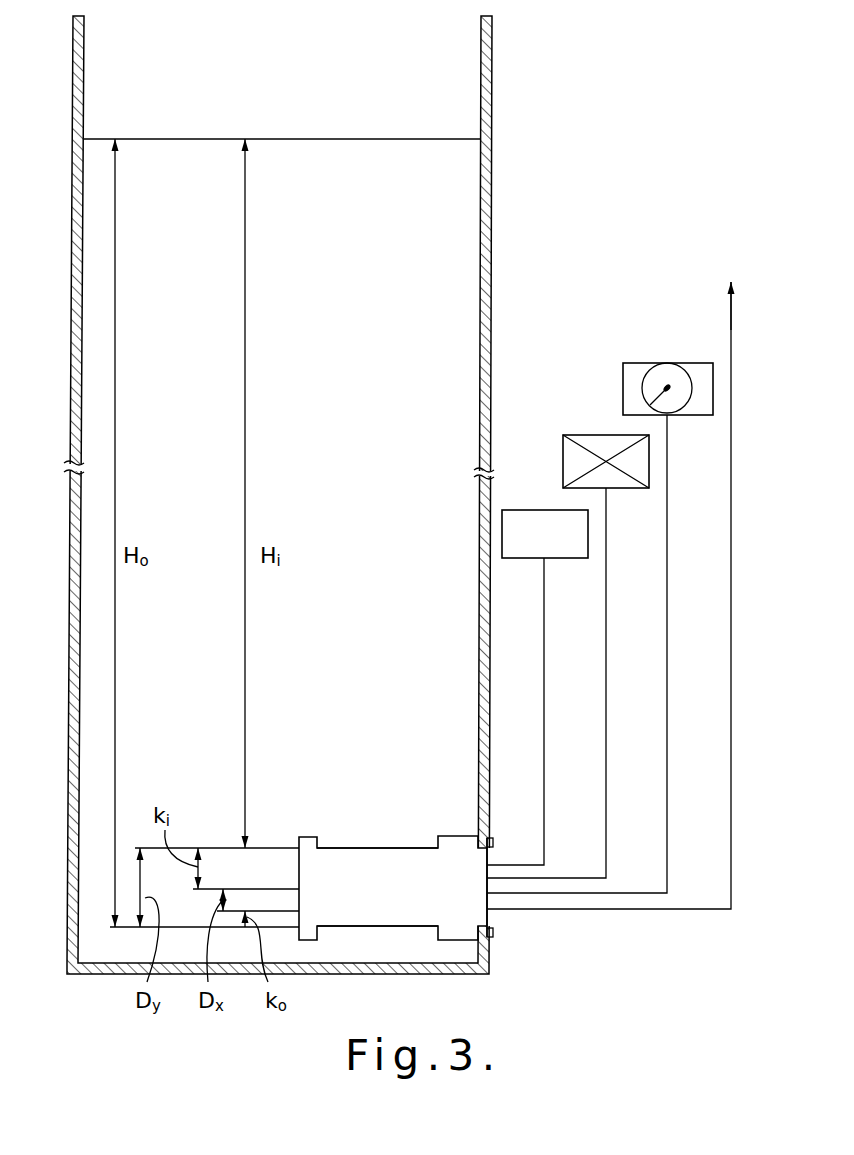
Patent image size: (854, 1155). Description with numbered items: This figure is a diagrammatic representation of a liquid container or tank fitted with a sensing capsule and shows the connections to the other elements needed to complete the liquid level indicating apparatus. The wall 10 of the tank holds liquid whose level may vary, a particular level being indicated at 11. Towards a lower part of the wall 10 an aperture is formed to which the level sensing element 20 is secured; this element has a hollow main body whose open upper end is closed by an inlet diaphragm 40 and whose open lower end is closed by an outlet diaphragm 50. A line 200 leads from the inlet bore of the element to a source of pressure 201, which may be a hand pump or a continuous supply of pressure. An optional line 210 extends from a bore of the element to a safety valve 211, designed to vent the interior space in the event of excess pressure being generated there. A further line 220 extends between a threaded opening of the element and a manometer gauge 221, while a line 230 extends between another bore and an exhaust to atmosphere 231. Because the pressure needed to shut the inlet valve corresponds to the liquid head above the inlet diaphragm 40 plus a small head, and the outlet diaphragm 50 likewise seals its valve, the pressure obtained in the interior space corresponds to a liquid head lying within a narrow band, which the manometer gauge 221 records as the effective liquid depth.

The wall of liquid container or tank 10 is at (279, 495).
The liquid level 11 is at (330, 139).
The level sensing element 20 is at (340, 836).
The inlet diaphragm 40 is at (388, 848).
The outlet diaphragm 50 is at (388, 926).
The line from inlet bore 200 is at (544, 667).
The source of pressure 201 is at (540, 508).
The line to safety valve 210 is at (606, 742).
The safety valve 211 is at (600, 436).
The line to manometer gauge 220 is at (667, 695).
The manometer gauge 221 is at (666, 368).
The line to exhaust 230 is at (731, 588).
The exhaust to atmosphere 231 is at (727, 322).